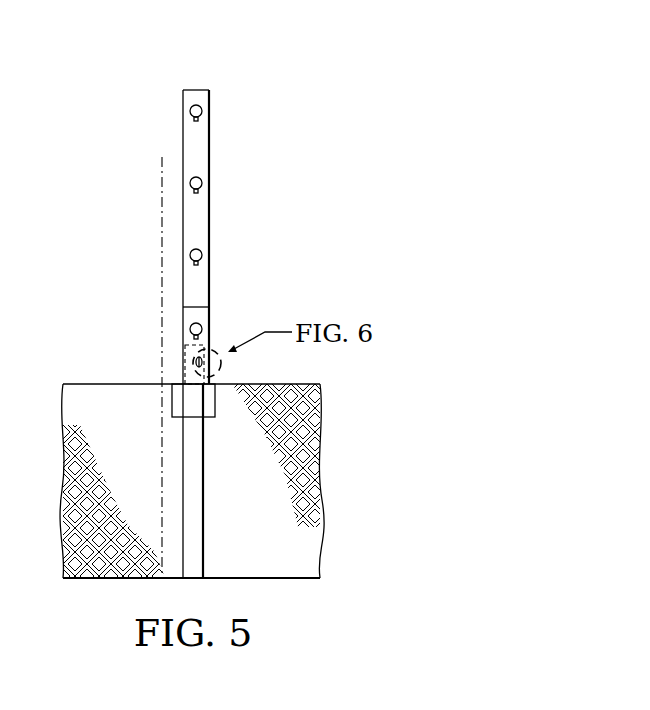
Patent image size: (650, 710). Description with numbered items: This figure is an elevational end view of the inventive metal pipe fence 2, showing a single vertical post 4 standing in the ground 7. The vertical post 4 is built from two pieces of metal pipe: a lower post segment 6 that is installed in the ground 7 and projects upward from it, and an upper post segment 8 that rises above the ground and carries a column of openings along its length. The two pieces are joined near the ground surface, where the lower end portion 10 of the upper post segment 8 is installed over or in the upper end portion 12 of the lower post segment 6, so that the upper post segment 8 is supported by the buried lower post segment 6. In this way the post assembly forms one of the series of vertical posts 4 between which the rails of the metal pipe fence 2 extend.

The metal pipe fence 2 is at (279, 110).
The vertical post 4 is at (176, 146).
The lower post segment 6 is at (183, 478).
The ground 7 is at (288, 571).
The upper post segment 8 is at (210, 222).
The lower end portion 10 is at (183, 353).
The upper end portion 12 is at (182, 369).